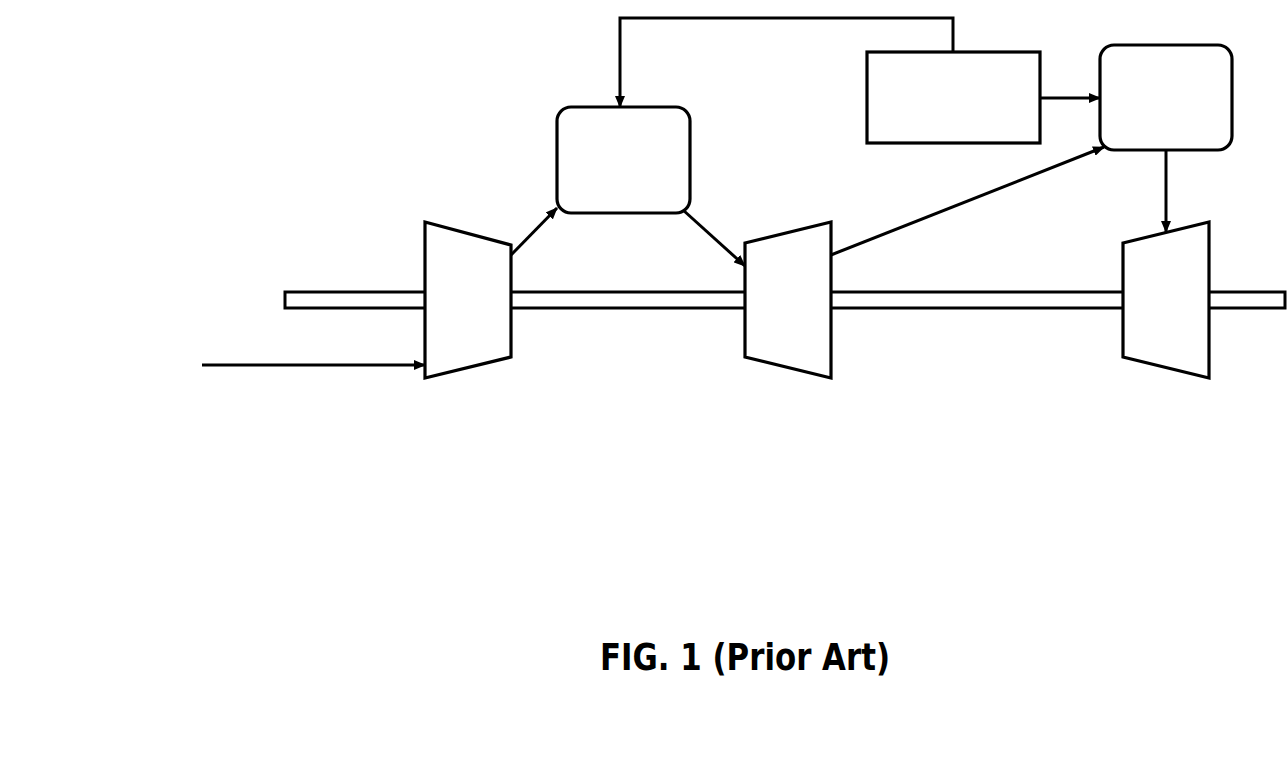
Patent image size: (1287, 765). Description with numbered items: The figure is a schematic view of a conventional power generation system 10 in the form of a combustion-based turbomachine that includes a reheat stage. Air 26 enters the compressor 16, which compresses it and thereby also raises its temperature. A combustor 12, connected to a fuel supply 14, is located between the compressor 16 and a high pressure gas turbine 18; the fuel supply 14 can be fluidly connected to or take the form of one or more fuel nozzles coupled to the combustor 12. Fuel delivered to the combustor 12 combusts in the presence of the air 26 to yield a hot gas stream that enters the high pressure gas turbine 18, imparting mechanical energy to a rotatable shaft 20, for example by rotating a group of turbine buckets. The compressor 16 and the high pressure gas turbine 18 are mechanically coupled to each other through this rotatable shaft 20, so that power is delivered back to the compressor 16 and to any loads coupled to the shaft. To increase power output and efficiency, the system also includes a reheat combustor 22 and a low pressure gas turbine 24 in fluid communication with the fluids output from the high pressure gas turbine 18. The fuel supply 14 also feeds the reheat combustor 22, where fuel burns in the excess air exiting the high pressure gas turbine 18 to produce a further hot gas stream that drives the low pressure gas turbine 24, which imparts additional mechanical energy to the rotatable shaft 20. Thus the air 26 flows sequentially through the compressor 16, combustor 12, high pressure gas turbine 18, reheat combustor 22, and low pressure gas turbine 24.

The power generation system 10 is at (380, 132).
The combustor 12 is at (604, 177).
The fuel supply 14 is at (934, 115).
The compressor 16 is at (450, 317).
The high pressure (HP) gas turbine 18 is at (769, 317).
The rotatable shaft 20 is at (634, 308).
The reheat combustor 22 is at (1150, 114).
The low pressure (LP) gas turbine 24 is at (1146, 317).
The air 26 is at (228, 367).